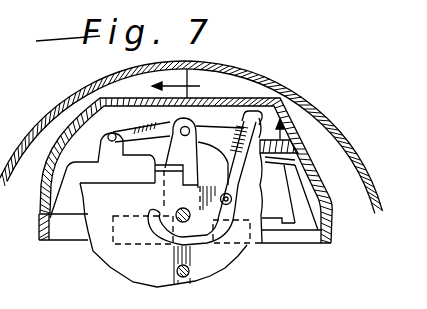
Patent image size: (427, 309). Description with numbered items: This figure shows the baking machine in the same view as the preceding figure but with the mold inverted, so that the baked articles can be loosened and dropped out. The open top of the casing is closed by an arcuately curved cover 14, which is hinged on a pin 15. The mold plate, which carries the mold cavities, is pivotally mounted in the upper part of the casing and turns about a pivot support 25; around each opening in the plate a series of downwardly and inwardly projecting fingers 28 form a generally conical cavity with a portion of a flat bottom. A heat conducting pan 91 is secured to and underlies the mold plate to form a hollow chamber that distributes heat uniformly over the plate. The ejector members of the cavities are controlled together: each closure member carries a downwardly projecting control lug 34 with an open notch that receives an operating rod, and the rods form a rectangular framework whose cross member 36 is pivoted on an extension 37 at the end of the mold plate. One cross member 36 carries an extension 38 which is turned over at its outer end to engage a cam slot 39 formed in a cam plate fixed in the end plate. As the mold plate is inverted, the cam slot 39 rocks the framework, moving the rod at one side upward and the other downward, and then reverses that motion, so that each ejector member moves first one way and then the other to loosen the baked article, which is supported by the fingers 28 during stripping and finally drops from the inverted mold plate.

The arcuately curved cover 14 is at (53, 109).
The heat conducting pan 91 is at (222, 99).
The control lug 34 is at (101, 146).
The cross member 36 is at (154, 128).
The extension 37 is at (173, 149).
The extension 38 is at (237, 168).
The finger 28 is at (303, 214).
The cam slot 39 is at (222, 235).
The pivot support 25 is at (177, 222).
The pin 15 is at (177, 271).